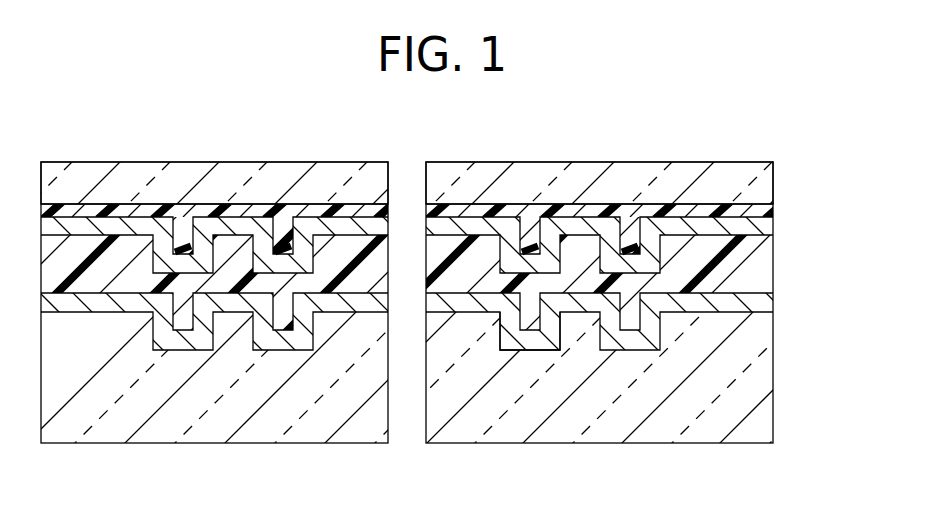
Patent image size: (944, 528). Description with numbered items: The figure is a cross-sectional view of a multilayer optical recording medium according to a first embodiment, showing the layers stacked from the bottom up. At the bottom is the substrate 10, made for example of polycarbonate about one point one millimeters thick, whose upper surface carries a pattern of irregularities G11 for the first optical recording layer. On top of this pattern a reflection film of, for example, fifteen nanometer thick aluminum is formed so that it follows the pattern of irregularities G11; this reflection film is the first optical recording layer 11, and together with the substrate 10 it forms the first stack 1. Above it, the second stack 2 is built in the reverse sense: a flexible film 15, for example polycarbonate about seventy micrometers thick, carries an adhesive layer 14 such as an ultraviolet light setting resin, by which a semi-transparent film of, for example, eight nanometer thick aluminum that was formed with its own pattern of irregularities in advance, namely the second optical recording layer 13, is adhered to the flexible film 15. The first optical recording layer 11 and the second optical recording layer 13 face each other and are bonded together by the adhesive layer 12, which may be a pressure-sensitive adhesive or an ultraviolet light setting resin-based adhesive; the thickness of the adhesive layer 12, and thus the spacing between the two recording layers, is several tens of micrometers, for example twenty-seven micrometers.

The first stack 1 is at (472, 300).
The second stack 2 is at (472, 300).
The substrate 10 is at (847, 297).
The first optical recording layer 11 is at (757, 302).
The adhesive layer 12 is at (757, 268).
The second optical recording layer 13 is at (847, 163).
The adhesive layer 14 is at (757, 211).
The flexible film 15 is at (757, 181).
The pattern of irregularities G11 is at (500, 350).